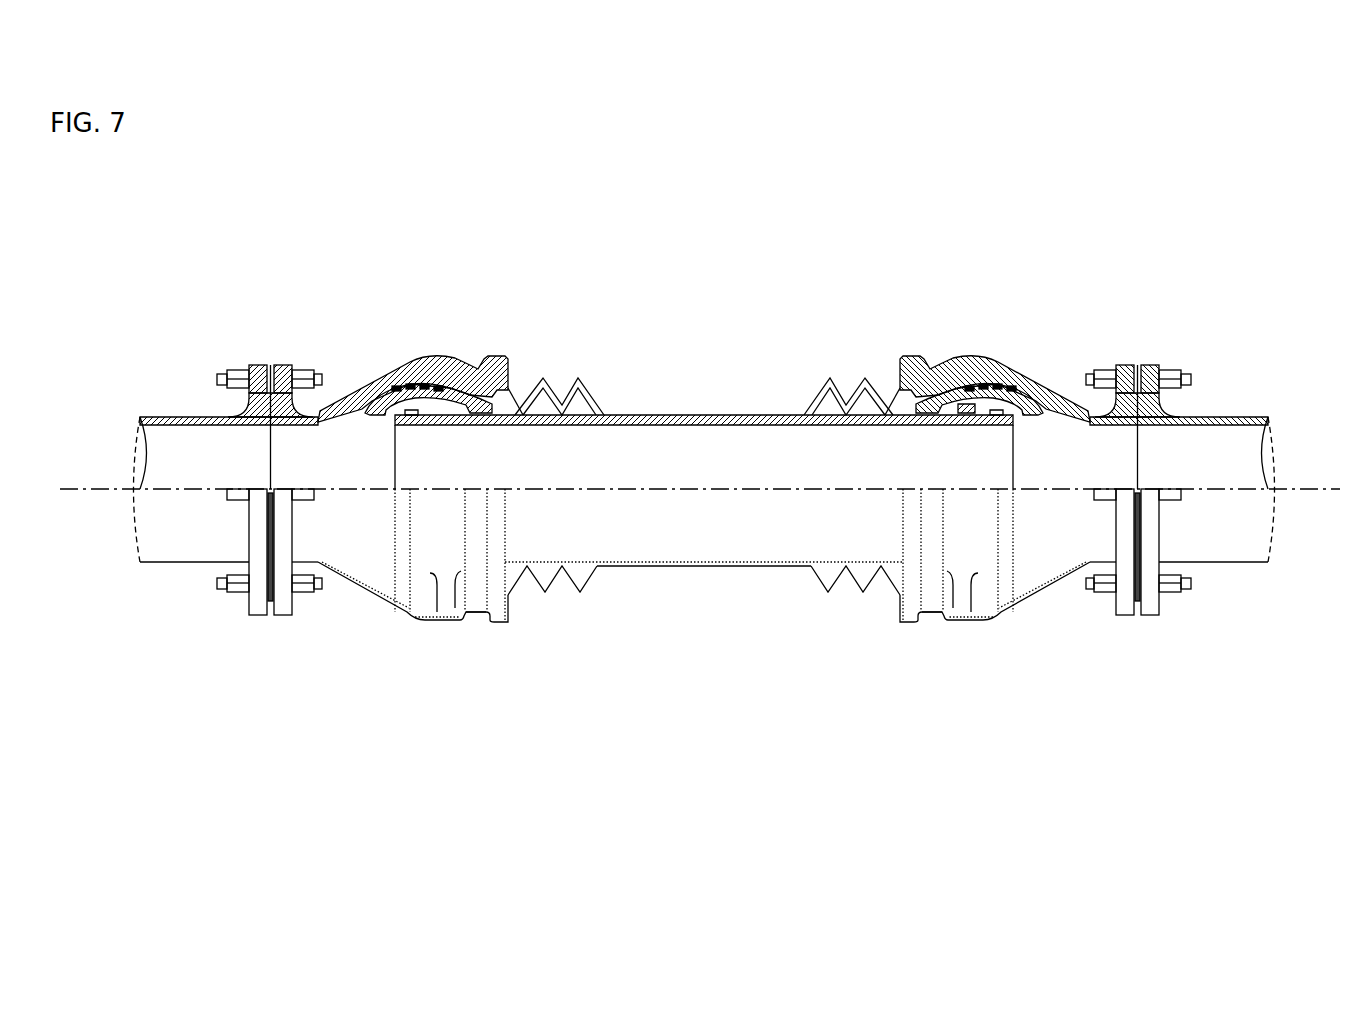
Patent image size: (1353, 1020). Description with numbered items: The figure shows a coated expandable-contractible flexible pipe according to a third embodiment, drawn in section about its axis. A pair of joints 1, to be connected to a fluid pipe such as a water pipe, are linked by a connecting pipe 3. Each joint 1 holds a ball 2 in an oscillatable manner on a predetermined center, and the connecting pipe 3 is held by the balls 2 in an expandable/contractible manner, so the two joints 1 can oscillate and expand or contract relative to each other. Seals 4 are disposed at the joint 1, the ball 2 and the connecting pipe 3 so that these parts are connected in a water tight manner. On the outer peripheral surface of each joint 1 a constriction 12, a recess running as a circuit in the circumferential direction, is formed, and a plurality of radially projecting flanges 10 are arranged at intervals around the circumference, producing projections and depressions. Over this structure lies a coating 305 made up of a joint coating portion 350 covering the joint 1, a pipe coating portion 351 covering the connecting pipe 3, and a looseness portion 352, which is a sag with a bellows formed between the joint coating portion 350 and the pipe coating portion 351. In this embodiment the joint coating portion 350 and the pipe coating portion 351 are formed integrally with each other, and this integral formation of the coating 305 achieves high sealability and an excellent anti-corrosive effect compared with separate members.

The joint 1 is at (386, 634).
The ball 2 is at (372, 414).
The connecting pipe 3 is at (725, 540).
The seal 4 is at (980, 390).
The flange 10 is at (450, 610).
The constriction 12 is at (477, 627).
The coating 305 is at (750, 245).
The joint coating portion 350 is at (442, 357).
The pipe coating portion 351 is at (703, 412).
The looseness portion 352 is at (585, 376).